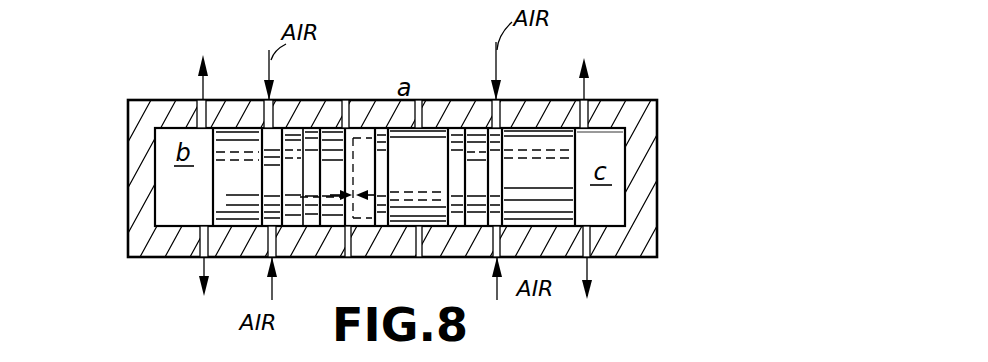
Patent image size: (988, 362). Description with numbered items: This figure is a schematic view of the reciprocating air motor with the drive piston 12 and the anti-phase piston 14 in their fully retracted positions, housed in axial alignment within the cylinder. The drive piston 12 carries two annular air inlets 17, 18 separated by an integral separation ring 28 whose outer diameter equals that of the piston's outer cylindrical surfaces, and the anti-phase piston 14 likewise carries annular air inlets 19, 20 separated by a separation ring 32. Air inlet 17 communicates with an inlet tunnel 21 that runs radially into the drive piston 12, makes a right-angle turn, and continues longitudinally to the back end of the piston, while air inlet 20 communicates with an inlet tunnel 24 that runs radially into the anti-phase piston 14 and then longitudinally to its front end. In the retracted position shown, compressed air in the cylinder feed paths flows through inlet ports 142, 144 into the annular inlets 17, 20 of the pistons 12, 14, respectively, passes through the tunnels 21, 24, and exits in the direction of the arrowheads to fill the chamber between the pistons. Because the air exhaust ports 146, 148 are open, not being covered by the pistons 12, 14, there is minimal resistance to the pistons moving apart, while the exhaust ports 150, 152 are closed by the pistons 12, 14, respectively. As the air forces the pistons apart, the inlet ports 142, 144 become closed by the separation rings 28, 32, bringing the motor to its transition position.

The drive piston 12 is at (215, 192).
The anti-phase piston 14 is at (568, 200).
The air inlet 17 is at (218, 266).
The air inlet 18 is at (321, 128).
The air inlet 19 is at (500, 100).
The air inlet 20 is at (497, 178).
The inlet tunnel 21 is at (316, 238).
The inlet tunnel 24 is at (432, 259).
The separation ring 28 is at (294, 128).
The separation ring 32 is at (479, 265).
The inlet port 142 is at (266, 100).
The inlet port 144 is at (506, 128).
The air exhaust port 146 is at (199, 100).
The air exhaust port 148 is at (587, 128).
The exhaust port 150 is at (382, 128).
The exhaust port 152 is at (422, 100).